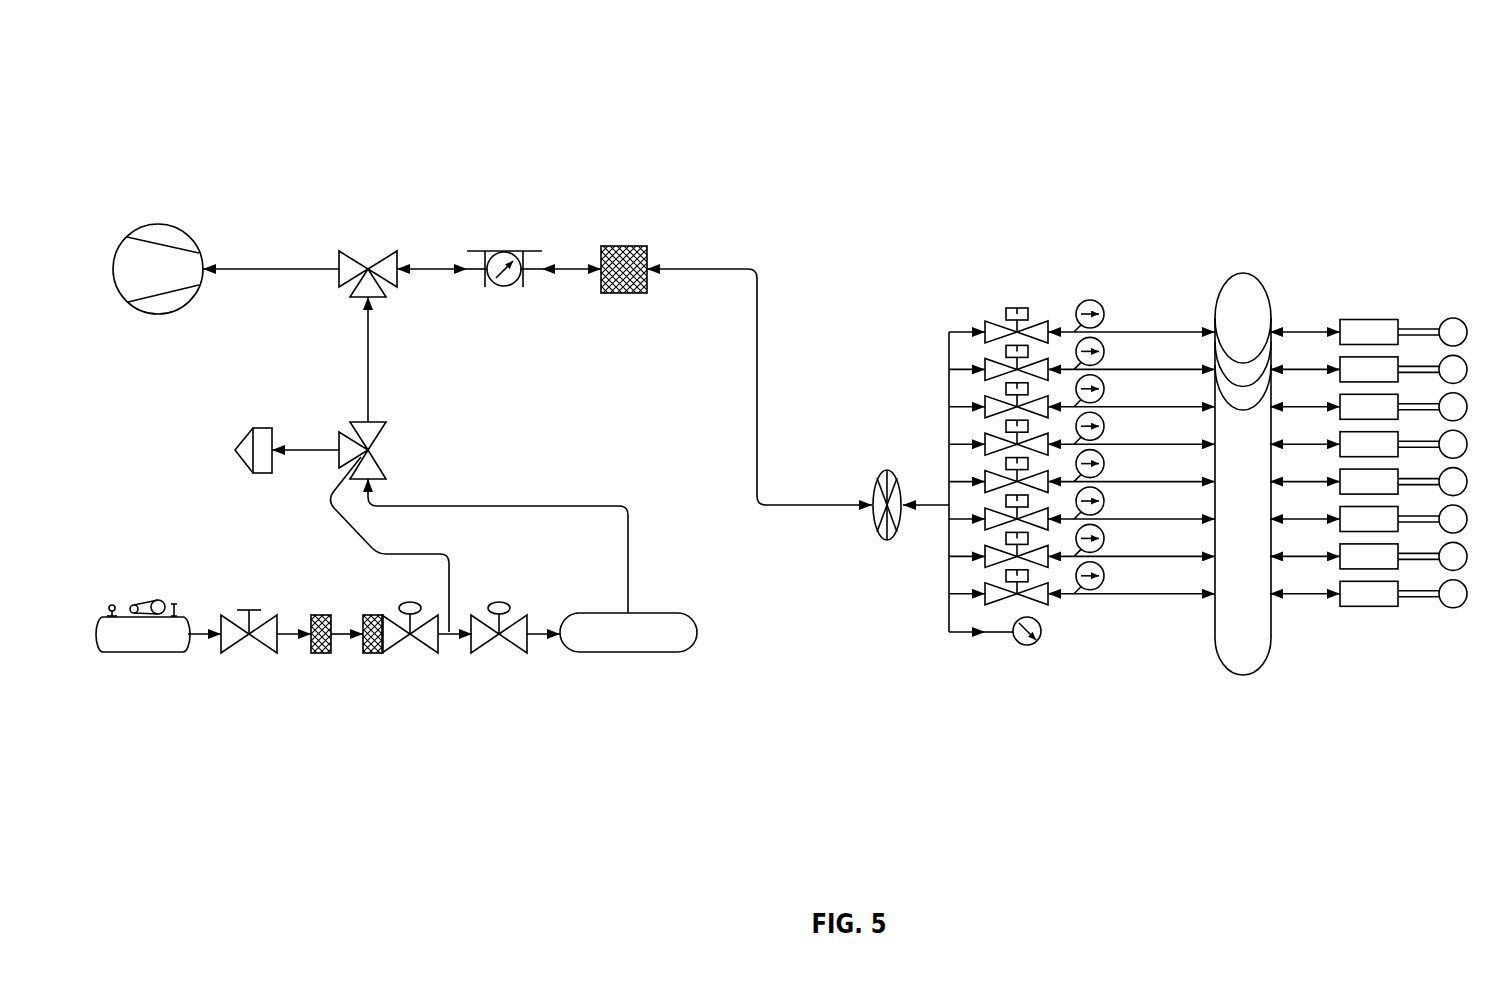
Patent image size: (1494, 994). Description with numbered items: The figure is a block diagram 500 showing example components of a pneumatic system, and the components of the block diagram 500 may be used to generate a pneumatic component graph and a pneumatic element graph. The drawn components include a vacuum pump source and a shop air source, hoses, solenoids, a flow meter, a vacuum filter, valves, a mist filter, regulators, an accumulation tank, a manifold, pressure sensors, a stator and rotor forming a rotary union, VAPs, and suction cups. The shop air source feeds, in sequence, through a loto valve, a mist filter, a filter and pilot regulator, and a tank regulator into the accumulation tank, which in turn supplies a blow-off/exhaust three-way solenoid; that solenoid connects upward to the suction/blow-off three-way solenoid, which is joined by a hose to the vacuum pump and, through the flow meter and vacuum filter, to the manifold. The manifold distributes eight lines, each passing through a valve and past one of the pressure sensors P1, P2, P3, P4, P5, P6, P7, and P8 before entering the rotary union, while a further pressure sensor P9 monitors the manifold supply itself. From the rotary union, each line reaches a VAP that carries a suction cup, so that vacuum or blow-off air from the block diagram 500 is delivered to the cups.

The block diagram 500 is at (191, 68).
The pressure sensor P1 is at (1107, 316).
The pressure sensor P2 is at (1107, 353).
The pressure sensor P3 is at (1107, 391).
The pressure sensor P4 is at (1107, 428).
The pressure sensor P5 is at (1107, 466).
The pressure sensor P6 is at (1107, 503).
The pressure sensor P7 is at (1107, 540).
The pressure sensor P8 is at (1107, 578).
The pressure sensor P9 is at (1045, 631).